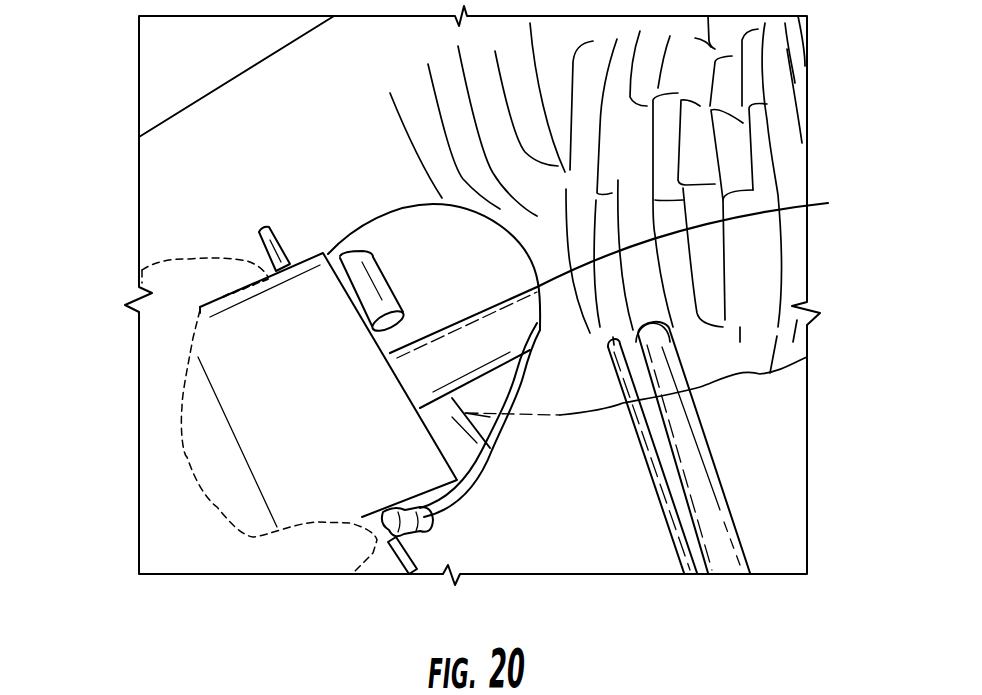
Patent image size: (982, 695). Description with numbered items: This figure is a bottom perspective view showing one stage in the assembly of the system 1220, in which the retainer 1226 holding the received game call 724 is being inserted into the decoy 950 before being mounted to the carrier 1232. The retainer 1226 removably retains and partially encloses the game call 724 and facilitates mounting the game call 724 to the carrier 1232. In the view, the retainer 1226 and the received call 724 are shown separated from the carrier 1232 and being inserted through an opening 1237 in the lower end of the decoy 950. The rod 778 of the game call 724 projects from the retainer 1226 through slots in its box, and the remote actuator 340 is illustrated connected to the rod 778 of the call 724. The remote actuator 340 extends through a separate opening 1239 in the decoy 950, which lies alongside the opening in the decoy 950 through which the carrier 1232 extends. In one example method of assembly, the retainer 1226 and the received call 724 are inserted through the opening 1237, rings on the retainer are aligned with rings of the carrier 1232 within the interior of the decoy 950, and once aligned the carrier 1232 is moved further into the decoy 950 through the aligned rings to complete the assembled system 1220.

The system 1220 is at (104, 124).
The game call 724 is at (267, 247).
The decoy 950 is at (807, 151).
The opening 1237 is at (635, 274).
The opening 1239 is at (610, 343).
The carrier 1232 is at (735, 528).
The retainer 1226 is at (317, 523).
The rod 778 is at (387, 538).
The remote actuator 340 is at (507, 438).